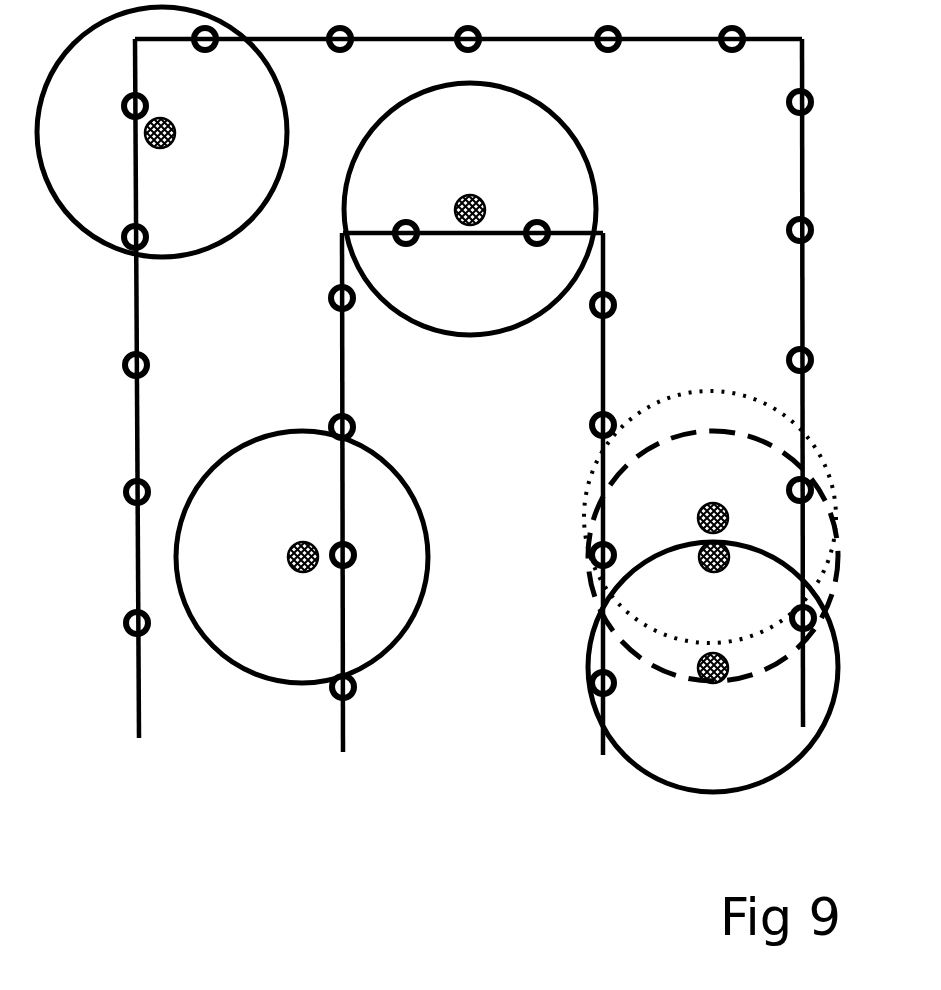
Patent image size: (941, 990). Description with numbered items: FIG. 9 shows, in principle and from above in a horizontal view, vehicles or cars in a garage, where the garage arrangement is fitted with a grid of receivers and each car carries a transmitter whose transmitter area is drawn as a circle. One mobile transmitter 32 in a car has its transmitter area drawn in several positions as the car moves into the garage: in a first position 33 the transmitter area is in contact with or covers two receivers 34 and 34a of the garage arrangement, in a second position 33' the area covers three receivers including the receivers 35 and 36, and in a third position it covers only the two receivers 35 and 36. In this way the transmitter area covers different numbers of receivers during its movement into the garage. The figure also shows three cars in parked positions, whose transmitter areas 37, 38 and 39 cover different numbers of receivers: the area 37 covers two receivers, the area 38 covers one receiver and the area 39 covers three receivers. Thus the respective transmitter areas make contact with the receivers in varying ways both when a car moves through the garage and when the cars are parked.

The mobile transmitter 32 is at (708, 683).
The first position of the transmitter area 33 is at (713, 712).
The second position of the transmitter area 33' is at (732, 551).
The receiver 34 is at (592, 688).
The receiver 34a is at (807, 630).
The receiver 35 is at (800, 477).
The receiver 36 is at (590, 558).
The transmitter area 37 is at (488, 338).
The transmitter area 38 is at (400, 640).
The transmitter area 39 is at (230, 235).